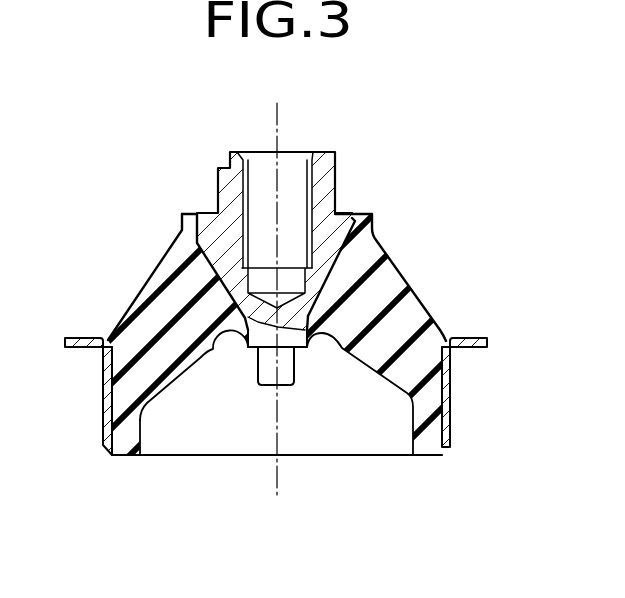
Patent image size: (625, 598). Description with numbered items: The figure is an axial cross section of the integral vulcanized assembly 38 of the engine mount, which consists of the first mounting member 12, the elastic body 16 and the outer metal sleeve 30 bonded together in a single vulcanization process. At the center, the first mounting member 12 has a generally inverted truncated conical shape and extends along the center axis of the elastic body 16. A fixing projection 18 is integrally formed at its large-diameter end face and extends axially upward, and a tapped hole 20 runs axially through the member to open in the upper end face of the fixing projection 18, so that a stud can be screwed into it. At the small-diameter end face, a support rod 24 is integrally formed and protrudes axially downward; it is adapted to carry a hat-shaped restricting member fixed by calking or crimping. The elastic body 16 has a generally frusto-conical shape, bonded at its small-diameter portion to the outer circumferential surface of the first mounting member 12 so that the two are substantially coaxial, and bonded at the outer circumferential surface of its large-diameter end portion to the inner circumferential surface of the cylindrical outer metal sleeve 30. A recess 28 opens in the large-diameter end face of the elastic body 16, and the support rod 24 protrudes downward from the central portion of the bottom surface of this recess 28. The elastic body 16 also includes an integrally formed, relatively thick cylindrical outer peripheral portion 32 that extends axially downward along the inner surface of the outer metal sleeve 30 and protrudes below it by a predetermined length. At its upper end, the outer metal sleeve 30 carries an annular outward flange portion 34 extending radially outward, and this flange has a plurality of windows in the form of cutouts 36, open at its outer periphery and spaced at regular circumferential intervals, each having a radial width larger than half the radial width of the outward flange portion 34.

The first mounting member 12 is at (337, 253).
The elastic body 16 is at (162, 300).
The fixing projection 18 is at (228, 183).
The tapped hole 20 is at (297, 178).
The support rod 24 is at (285, 375).
The recess 28 is at (197, 363).
The outer metal sleeve 30 is at (447, 417).
The outer peripheral portion 32 is at (122, 453).
The outward flange portion 34 is at (470, 345).
The cutouts 36 is at (75, 337).
The integral vulcanized assembly 38 is at (440, 149).